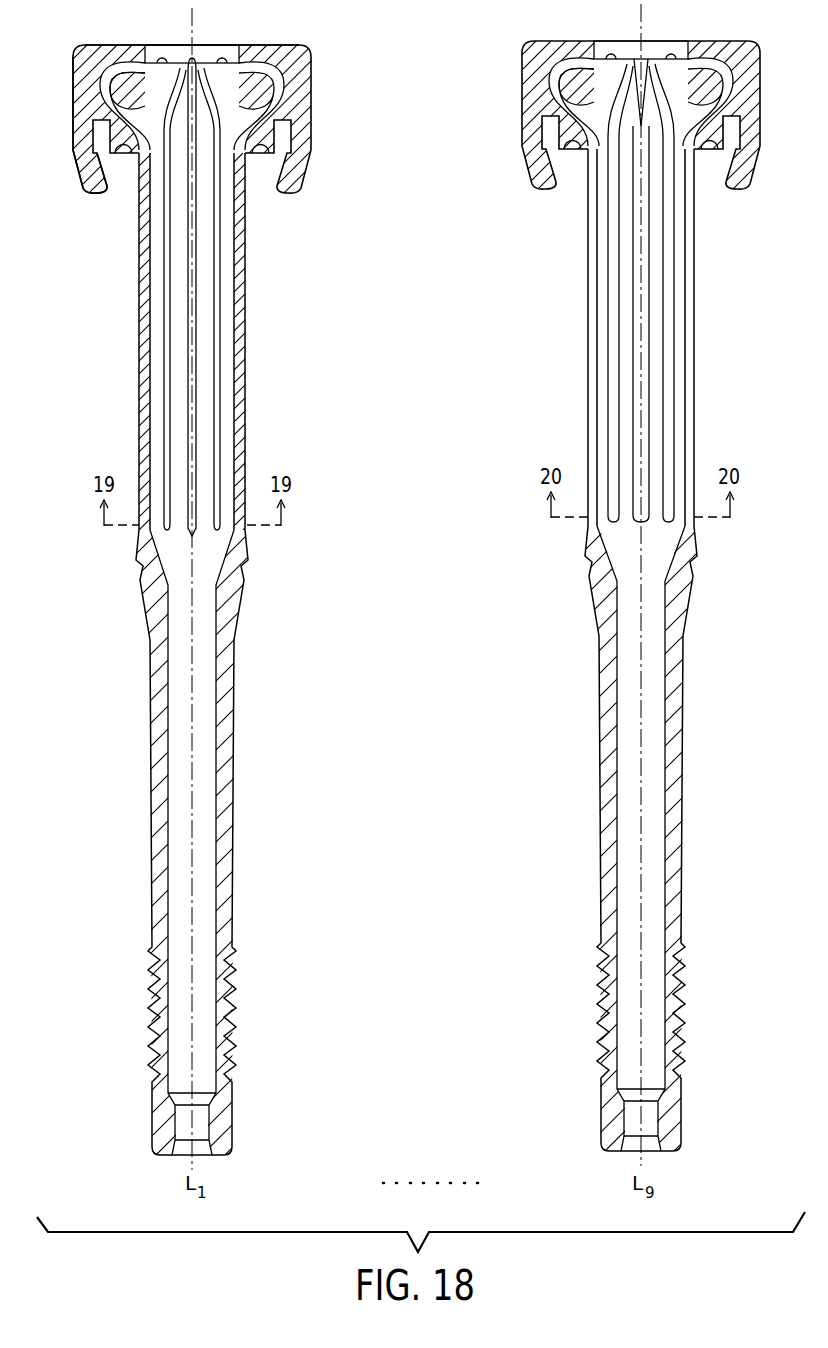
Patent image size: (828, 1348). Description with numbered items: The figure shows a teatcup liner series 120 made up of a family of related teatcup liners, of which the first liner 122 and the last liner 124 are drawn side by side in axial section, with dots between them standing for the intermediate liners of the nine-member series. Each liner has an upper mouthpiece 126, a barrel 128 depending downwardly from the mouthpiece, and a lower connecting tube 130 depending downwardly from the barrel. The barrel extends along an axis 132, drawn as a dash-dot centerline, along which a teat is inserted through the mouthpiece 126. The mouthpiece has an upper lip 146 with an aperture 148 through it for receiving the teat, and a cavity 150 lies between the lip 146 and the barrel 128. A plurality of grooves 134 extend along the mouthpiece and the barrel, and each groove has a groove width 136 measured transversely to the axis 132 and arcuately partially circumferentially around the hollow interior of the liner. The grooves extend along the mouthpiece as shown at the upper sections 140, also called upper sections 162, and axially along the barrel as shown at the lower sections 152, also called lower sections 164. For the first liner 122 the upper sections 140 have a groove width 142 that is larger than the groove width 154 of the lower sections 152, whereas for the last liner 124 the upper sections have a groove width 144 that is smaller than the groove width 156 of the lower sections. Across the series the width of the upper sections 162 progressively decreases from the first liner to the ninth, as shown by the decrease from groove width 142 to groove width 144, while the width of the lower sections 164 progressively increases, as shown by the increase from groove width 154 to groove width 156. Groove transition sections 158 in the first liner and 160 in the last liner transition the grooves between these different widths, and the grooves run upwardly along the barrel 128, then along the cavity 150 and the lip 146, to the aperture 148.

The teatcup liner series 120 is at (381, 96).
The teatcup liner 122 is at (120, 45).
The teatcup liner 124 is at (599, 112).
The upper mouthpiece 126 is at (39, 103).
The barrel 128 is at (310, 341).
The lower connecting tube 130 is at (414, 842).
The axis 132 is at (160, 842).
The grooves 134 is at (243, 343).
The groove width 136 is at (657, 293).
The upper sections of the grooves 140 is at (80, 106).
The groove width 142 is at (211, 80).
The groove width 144 is at (532, 86).
The upper lip 146 is at (177, 27).
The aperture 148 is at (191, 36).
The cavity 150 is at (82, 77).
The lower sections of the grooves 152 is at (132, 299).
The groove width 154 is at (133, 300).
The groove width 156 is at (589, 290).
The groove transition section 158 is at (99, 152).
The groove transition section 160 is at (532, 102).
The upper sections of the grooves 162 is at (303, 106).
The lower sections of the grooves 164 is at (250, 299).